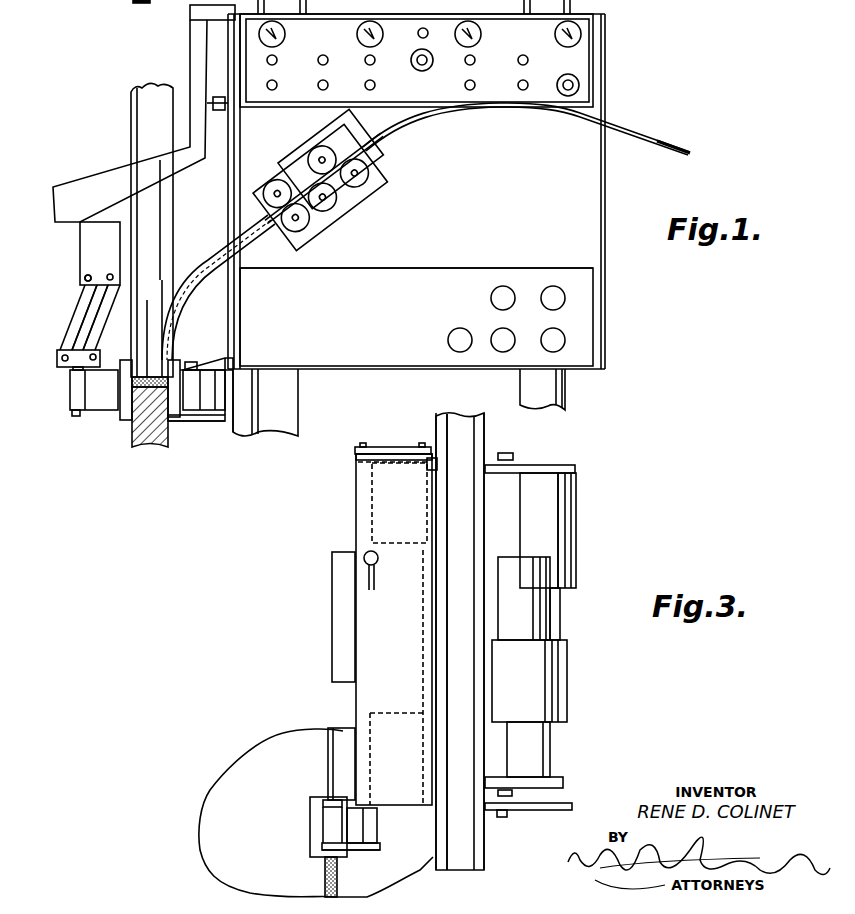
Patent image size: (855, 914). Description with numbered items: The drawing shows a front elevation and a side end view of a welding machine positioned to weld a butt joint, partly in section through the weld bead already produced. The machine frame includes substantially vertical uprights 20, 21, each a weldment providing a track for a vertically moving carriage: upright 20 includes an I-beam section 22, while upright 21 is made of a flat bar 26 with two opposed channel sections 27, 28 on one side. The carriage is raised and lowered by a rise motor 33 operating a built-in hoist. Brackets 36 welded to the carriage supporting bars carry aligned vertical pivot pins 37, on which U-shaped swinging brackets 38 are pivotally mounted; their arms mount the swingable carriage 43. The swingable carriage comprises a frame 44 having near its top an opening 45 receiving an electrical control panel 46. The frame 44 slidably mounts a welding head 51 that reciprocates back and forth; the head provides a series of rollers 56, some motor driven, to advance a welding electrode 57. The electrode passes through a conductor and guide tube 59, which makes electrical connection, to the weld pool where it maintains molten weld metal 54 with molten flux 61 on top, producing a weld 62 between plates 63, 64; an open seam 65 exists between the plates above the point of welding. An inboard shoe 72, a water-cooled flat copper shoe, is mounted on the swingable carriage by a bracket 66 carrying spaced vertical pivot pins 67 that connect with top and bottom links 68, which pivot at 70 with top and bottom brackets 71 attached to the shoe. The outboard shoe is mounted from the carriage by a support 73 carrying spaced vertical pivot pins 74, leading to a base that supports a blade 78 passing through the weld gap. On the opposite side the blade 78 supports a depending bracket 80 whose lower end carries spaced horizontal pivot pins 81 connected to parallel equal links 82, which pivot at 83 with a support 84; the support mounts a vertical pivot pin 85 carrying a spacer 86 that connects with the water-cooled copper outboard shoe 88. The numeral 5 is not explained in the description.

In FIG. 3, the spindle housing 5 is at (529, 708).
In FIG. 1, the upright 20 is at (276, 425).
In FIG. 1, the upright 21 is at (548, 402).
In FIG. 3, the upright 21 is at (462, 535).
In FIG. 1, the I-beam section 22 is at (243, 430).
In FIG. 3, the flat bar 26 is at (470, 414).
In FIG. 3, the channel section 27 is at (486, 437).
In FIG. 3, the channel section 28 is at (440, 437).
In FIG. 3, the rise motor 33 is at (540, 523).
In FIG. 3, the bracket 36 is at (490, 473).
In FIG. 3, the pivot pin 37 is at (513, 456).
In FIG. 3, the swinging bracket 38 is at (548, 811).
In FIG. 1, the swingable carriage 43 is at (416, 317).
In FIG. 3, the swingable carriage 43 is at (396, 677).
In FIG. 1, the frame 44 is at (604, 206).
In FIG. 3, the frame 44 is at (394, 629).
In FIG. 1, the opening 45 is at (602, 60).
In FIG. 1, the electrical control panel 46 is at (420, 58).
In FIG. 1, the welding head 51 is at (370, 201).
In FIG. 1, the molten weld metal 54 is at (147, 330).
In FIG. 1, the roller 56 is at (365, 176).
In FIG. 1, the welding electrode 57 is at (684, 142).
In FIG. 3, the welding electrode 57 is at (378, 572).
In FIG. 1, the conductor and guide tube 59 is at (210, 262).
In FIG. 1, the molten flux 61 is at (163, 282).
In FIG. 1, the weld 62 is at (133, 442).
In FIG. 3, the weld 62 is at (325, 872).
In FIG. 1, the plate 63 is at (130, 2).
In FIG. 3, the plate 63 is at (316, 813).
In FIG. 1, the plate 64 is at (143, 105).
In FIG. 3, the plate 64 is at (347, 735).
In FIG. 1, the open seam 65 is at (163, 197).
In FIG. 1, the bracket 66 is at (226, 367).
In FIG. 3, the bracket 66 is at (372, 827).
In FIG. 1, the vertical pivot pin 67 is at (229, 360).
In FIG. 3, the vertical pivot pin 67 is at (365, 853).
In FIG. 1, the link 68 is at (222, 416).
In FIG. 3, the link 68 is at (382, 845).
In FIG. 1, the pivot connection 70 is at (192, 362).
In FIG. 3, the pivot connection 70 is at (330, 800).
In FIG. 1, the bracket 71 is at (185, 418).
In FIG. 1, the inboard shoe 72 is at (177, 361).
In FIG. 3, the inboard shoe 72 is at (315, 825).
In FIG. 1, the support 73 is at (223, 14).
In FIG. 3, the support 73 is at (373, 447).
In FIG. 3, the vertical pivot pin 74 is at (358, 446).
In FIG. 1, the blade 78 is at (117, 163).
In FIG. 1, the depending bracket 80 is at (100, 253).
In FIG. 1, the horizontal pivot pin 81 is at (85, 276).
In FIG. 1, the link 82 is at (77, 303).
In FIG. 1, the pivot connection 83 is at (62, 367).
In FIG. 1, the support 84 is at (73, 355).
In FIG. 1, the vertical pivot pin 85 is at (76, 417).
In FIG. 1, the spacer 86 is at (105, 397).
In FIG. 1, the outboard shoe 88 is at (126, 361).